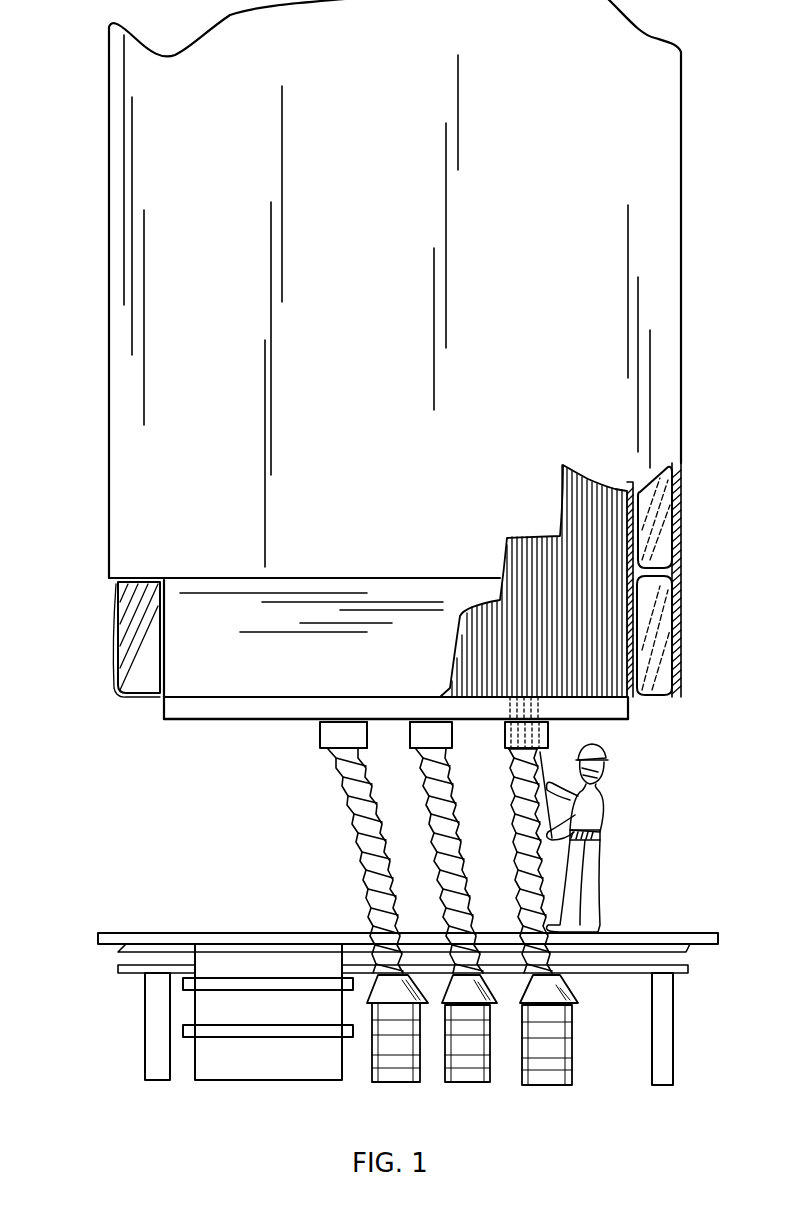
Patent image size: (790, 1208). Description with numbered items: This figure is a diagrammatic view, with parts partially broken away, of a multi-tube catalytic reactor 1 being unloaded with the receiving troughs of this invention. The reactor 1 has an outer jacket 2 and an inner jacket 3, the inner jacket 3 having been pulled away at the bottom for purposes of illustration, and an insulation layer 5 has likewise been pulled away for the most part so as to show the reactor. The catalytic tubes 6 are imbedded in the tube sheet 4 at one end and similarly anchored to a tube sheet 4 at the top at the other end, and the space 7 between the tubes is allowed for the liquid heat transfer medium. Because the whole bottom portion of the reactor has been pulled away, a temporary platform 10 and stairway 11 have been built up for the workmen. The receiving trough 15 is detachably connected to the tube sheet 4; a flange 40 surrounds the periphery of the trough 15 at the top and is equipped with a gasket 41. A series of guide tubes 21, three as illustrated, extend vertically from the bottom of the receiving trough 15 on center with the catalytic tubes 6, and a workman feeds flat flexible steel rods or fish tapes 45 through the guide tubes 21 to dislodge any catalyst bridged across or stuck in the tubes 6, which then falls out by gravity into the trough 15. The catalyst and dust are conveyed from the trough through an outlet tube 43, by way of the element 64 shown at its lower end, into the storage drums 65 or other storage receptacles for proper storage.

The reactor 1 is at (394, 264).
The outer jacket 2 is at (135, 540).
The inner jacket 3 is at (212, 668).
The tube sheet 4 is at (620, 706).
The insulation layer 5 is at (655, 633).
The catalytic tubes 6 is at (530, 535).
The space between the tubes 7 is at (528, 530).
The temporary platform 10 is at (98, 939).
The stairway 11 is at (288, 1013).
The receiving trough 15 is at (412, 736).
The guide tubes 21 is at (506, 745).
The flange 40 is at (318, 725).
The gasket 41 is at (452, 723).
The outlet tube 43 is at (370, 876).
The fish tapes 45 is at (544, 725).
The funnel 64 is at (568, 985).
The storage drums 65 is at (560, 1033).